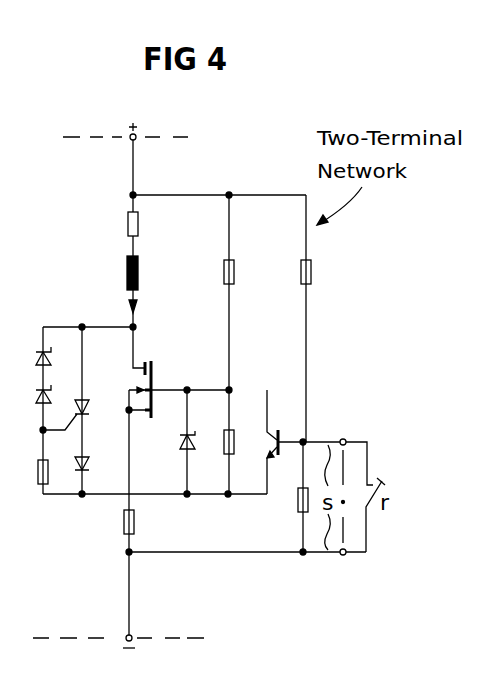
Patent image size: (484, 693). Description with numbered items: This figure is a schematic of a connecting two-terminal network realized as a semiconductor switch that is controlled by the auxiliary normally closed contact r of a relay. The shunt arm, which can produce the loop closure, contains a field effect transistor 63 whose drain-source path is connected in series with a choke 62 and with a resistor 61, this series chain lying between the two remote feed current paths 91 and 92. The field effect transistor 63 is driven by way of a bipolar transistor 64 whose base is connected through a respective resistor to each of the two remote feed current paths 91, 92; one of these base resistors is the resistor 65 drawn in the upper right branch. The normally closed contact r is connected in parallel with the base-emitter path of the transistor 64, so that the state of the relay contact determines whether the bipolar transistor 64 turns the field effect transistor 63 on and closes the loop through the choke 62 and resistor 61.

The resistor 61 is at (121, 225).
The choke 62 is at (120, 291).
The field effect transistor 63 is at (153, 385).
The bipolar transistor 64 is at (279, 431).
The resistor 65 is at (294, 318).
The remote feed current path 91 is at (138, 159).
The remote feed current path 92 is at (129, 602).